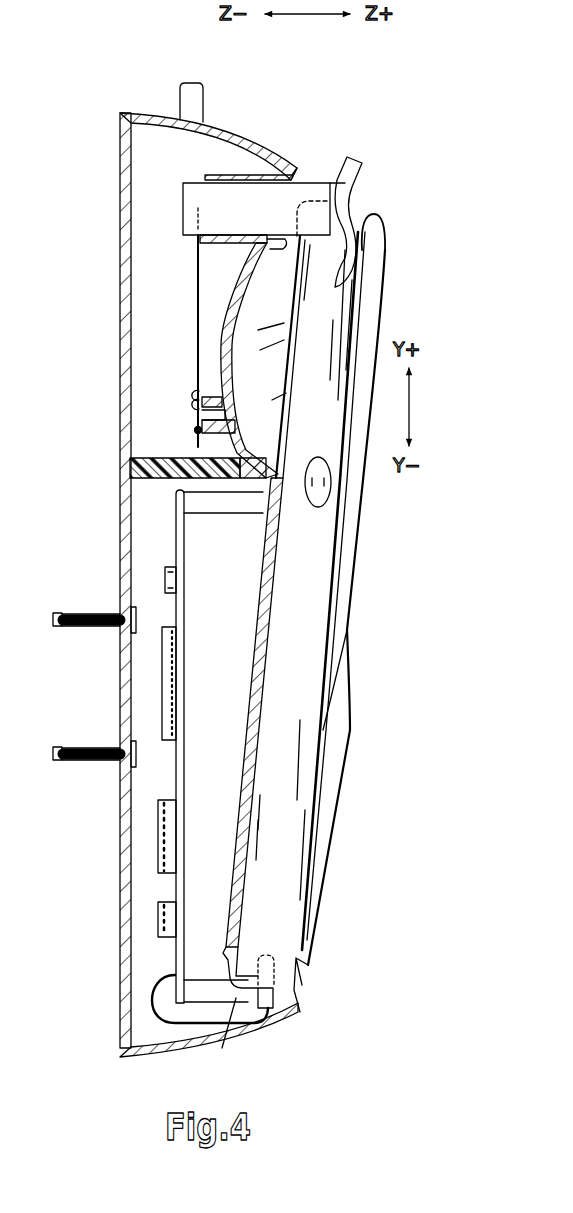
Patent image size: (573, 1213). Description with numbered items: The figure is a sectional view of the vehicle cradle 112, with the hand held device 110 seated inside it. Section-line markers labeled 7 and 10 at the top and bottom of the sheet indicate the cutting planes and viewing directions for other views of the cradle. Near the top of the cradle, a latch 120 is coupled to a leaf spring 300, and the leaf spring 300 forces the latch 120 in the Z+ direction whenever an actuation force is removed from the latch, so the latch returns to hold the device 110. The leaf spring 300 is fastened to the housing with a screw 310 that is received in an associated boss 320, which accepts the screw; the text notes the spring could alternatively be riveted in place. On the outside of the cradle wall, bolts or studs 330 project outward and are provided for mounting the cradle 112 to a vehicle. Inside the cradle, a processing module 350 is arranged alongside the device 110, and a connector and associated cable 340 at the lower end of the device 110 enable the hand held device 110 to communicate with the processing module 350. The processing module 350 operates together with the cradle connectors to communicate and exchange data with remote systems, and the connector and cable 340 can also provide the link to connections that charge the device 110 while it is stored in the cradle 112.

The section line for FIG. 7 is at (132, 62).
The section line for FIG. 10 is at (50, 42).
The hand held device 110 is at (307, 569).
The vehicle cradle 112 is at (234, 127).
The latch 120 is at (352, 181).
The leaf spring 300 is at (197, 347).
The screw 310 is at (186, 396).
The boss 320 is at (218, 422).
The bolts or studs 330 is at (74, 763).
The connector and associated cable 340 is at (272, 1015).
The processing module 350 is at (170, 543).